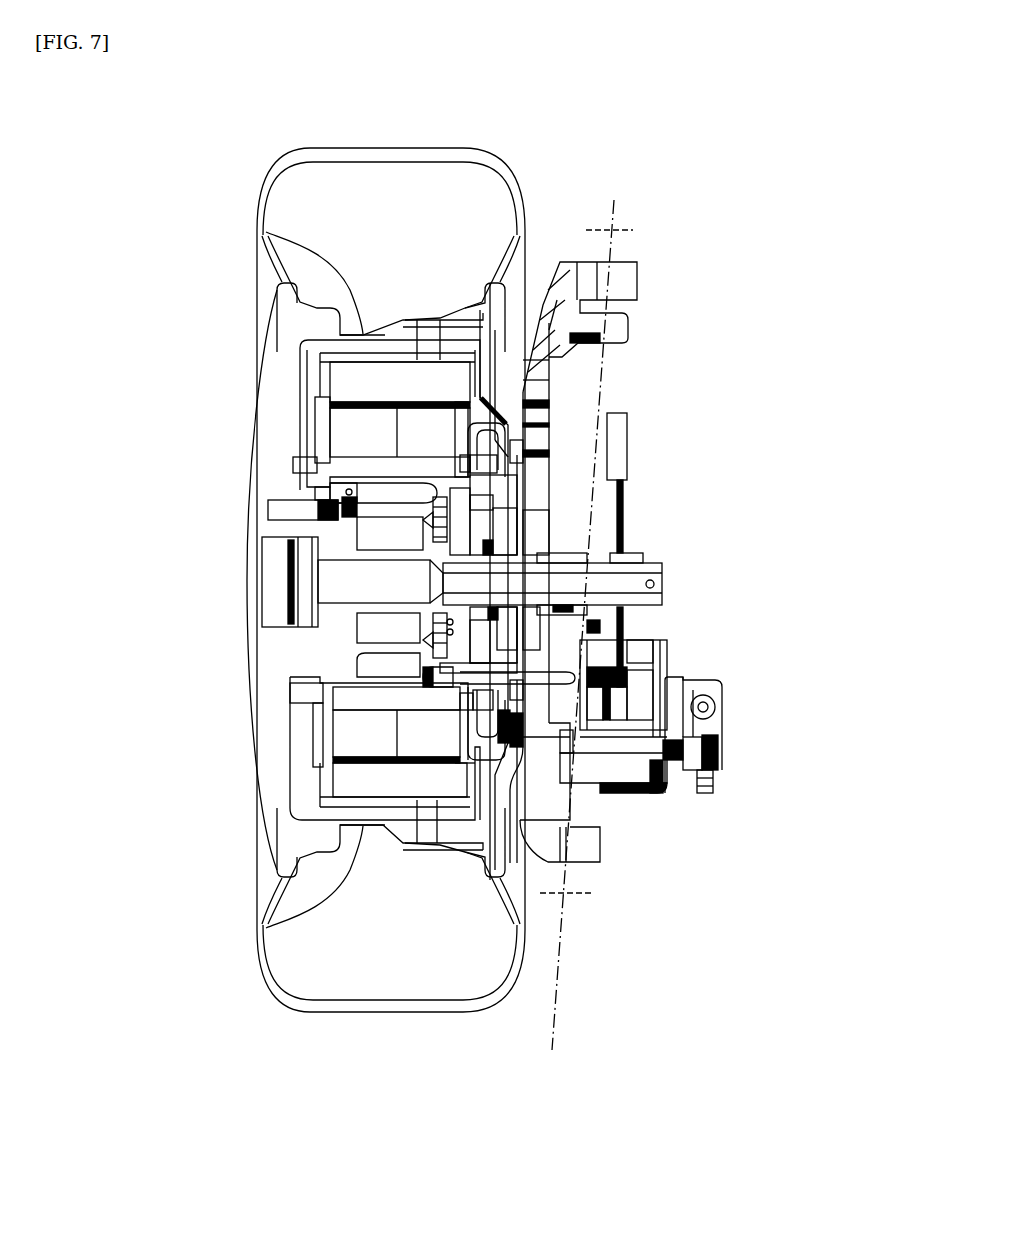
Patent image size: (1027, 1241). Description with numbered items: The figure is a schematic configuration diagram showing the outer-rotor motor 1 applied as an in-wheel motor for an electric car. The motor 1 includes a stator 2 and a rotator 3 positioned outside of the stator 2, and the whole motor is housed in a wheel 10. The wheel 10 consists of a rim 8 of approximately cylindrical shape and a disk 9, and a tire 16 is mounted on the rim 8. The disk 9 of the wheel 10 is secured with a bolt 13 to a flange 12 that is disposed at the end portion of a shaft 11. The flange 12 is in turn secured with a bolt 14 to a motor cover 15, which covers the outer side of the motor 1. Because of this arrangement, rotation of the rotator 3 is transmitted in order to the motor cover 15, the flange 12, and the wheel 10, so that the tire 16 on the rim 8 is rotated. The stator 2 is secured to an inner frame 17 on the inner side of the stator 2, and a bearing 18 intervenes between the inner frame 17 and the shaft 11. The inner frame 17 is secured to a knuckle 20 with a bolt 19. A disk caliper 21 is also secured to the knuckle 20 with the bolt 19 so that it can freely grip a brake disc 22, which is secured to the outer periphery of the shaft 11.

The outer-rotor motor 1 is at (706, 337).
The stator 2 is at (445, 430).
The rotator 3 is at (443, 383).
The rim 8 is at (292, 243).
The disk 9 is at (277, 393).
The wheel 10 is at (190, 212).
The shaft 11 is at (503, 567).
The flange 12 is at (335, 535).
The bolt 13 is at (297, 503).
The bolt 14 is at (310, 465).
The motor cover 15 is at (410, 318).
The tire 16 is at (430, 155).
The inner frame 17 is at (457, 483).
The bearing 18 is at (300, 555).
The bolt 19 is at (557, 677).
The knuckle 20 is at (618, 325).
The disk caliper 21 is at (657, 748).
The brake disc 22 is at (613, 470).